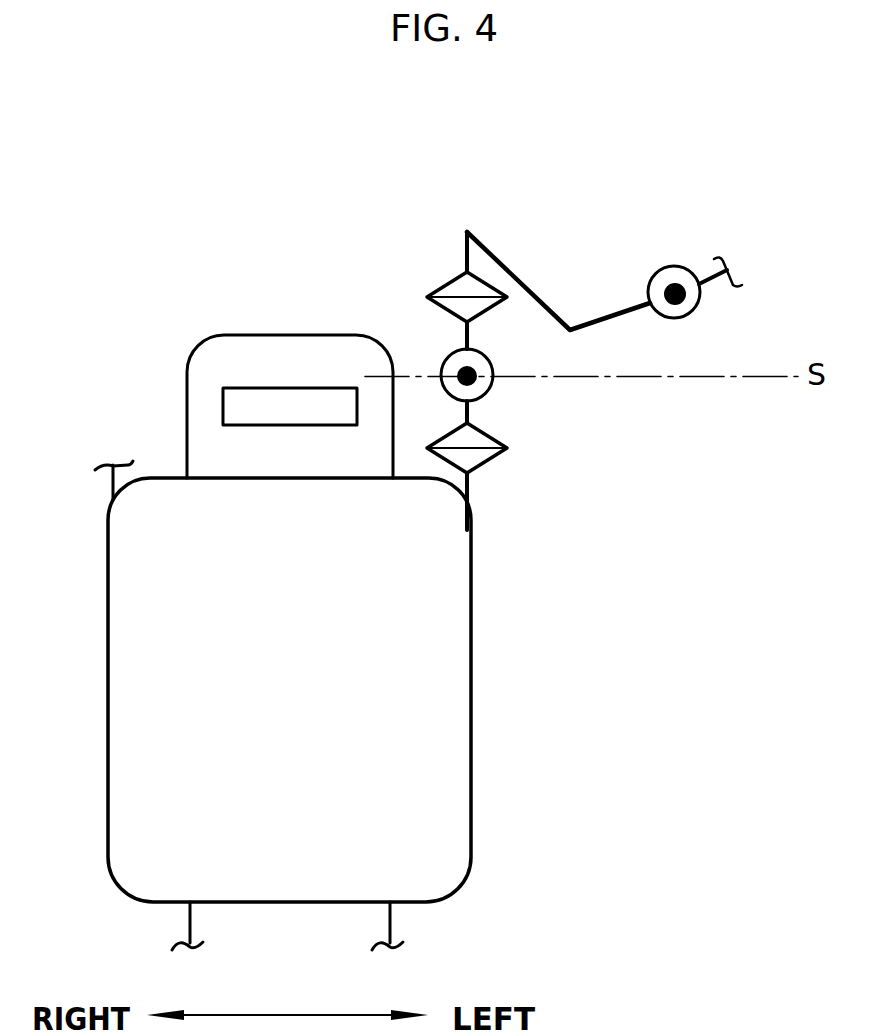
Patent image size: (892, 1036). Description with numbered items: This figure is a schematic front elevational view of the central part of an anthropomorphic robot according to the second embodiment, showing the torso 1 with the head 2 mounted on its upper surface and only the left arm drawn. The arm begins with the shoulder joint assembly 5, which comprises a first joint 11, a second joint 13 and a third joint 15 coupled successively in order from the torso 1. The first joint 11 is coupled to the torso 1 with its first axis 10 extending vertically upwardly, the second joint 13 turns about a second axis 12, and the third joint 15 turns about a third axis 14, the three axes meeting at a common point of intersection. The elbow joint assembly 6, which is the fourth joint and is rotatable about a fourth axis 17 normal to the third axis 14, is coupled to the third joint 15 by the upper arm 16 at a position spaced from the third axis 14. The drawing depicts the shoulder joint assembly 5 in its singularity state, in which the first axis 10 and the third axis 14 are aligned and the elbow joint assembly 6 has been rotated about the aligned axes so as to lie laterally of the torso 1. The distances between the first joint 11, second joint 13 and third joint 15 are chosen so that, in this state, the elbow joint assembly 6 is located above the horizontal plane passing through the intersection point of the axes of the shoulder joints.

The torso 1 is at (472, 598).
The head 2 is at (222, 335).
The shoulder joint assembly 5 is at (415, 248).
The elbow joint assembly 6 is at (678, 266).
The first axis 10 is at (467, 480).
The first joint 11 is at (484, 434).
The second axis 12 is at (476, 382).
The second joint 13 is at (444, 360).
The third axis 14 is at (463, 323).
The third joint 15 is at (446, 282).
The upper arm 16 is at (532, 288).
The fourth axis 17 is at (684, 300).